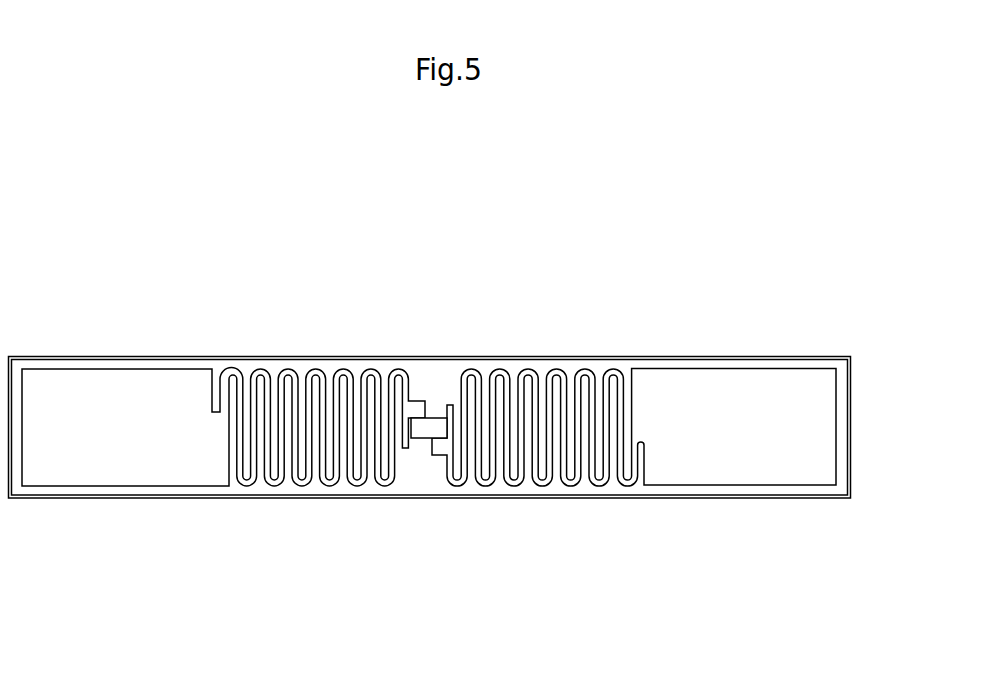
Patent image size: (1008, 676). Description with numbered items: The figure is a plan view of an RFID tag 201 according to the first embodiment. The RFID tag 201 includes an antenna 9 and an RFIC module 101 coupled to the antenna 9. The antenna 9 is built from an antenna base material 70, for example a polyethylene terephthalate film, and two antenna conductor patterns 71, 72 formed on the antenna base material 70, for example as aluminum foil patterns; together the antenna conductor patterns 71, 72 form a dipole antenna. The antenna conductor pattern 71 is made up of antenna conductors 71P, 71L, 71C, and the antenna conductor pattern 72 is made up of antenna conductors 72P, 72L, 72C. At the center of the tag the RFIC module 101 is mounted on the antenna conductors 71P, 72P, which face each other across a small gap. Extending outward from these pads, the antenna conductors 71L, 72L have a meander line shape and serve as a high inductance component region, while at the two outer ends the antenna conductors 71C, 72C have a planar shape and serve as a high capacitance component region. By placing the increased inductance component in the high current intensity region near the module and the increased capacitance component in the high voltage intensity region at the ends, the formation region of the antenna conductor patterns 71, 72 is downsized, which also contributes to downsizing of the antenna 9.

The RFID tag 201 is at (137, 196).
The antenna 9 is at (811, 316).
The antenna base material 70 is at (849, 422).
The antenna conductor pattern 71 is at (450, 283).
The antenna conductor 71C is at (113, 386).
The antenna conductor 71L is at (313, 367).
The antenna conductor 71P is at (414, 400).
The RFIC module 101 is at (430, 417).
The antenna conductor pattern 72 is at (770, 569).
The antenna conductor 72P is at (442, 457).
The antenna conductor 72L is at (544, 488).
The antenna conductor 72C is at (745, 467).